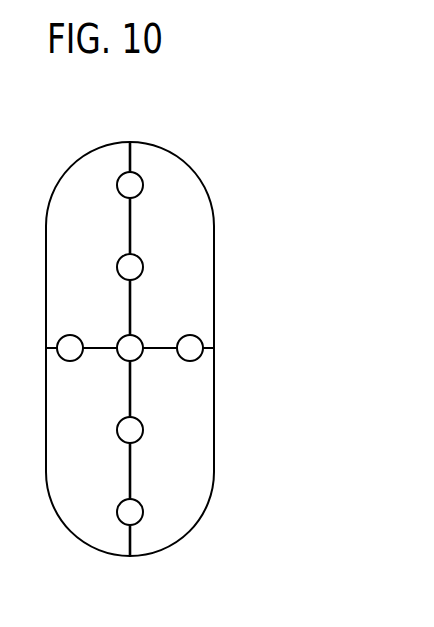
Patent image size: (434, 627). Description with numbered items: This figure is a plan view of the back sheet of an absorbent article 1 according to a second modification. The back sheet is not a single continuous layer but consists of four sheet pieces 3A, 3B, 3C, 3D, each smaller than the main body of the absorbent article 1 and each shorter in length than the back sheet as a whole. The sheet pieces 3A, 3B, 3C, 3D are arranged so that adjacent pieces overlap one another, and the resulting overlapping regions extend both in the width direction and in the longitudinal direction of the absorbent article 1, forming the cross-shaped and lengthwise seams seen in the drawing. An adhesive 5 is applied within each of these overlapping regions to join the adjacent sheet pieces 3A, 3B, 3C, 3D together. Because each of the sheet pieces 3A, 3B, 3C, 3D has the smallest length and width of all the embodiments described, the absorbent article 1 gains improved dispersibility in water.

The absorbent article 1 is at (250, 120).
The sheet piece 3A is at (105, 161).
The sheet piece 3B is at (158, 163).
The sheet piece 3C is at (92, 535).
The sheet piece 3D is at (167, 535).
The adhesive 5 is at (133, 186).